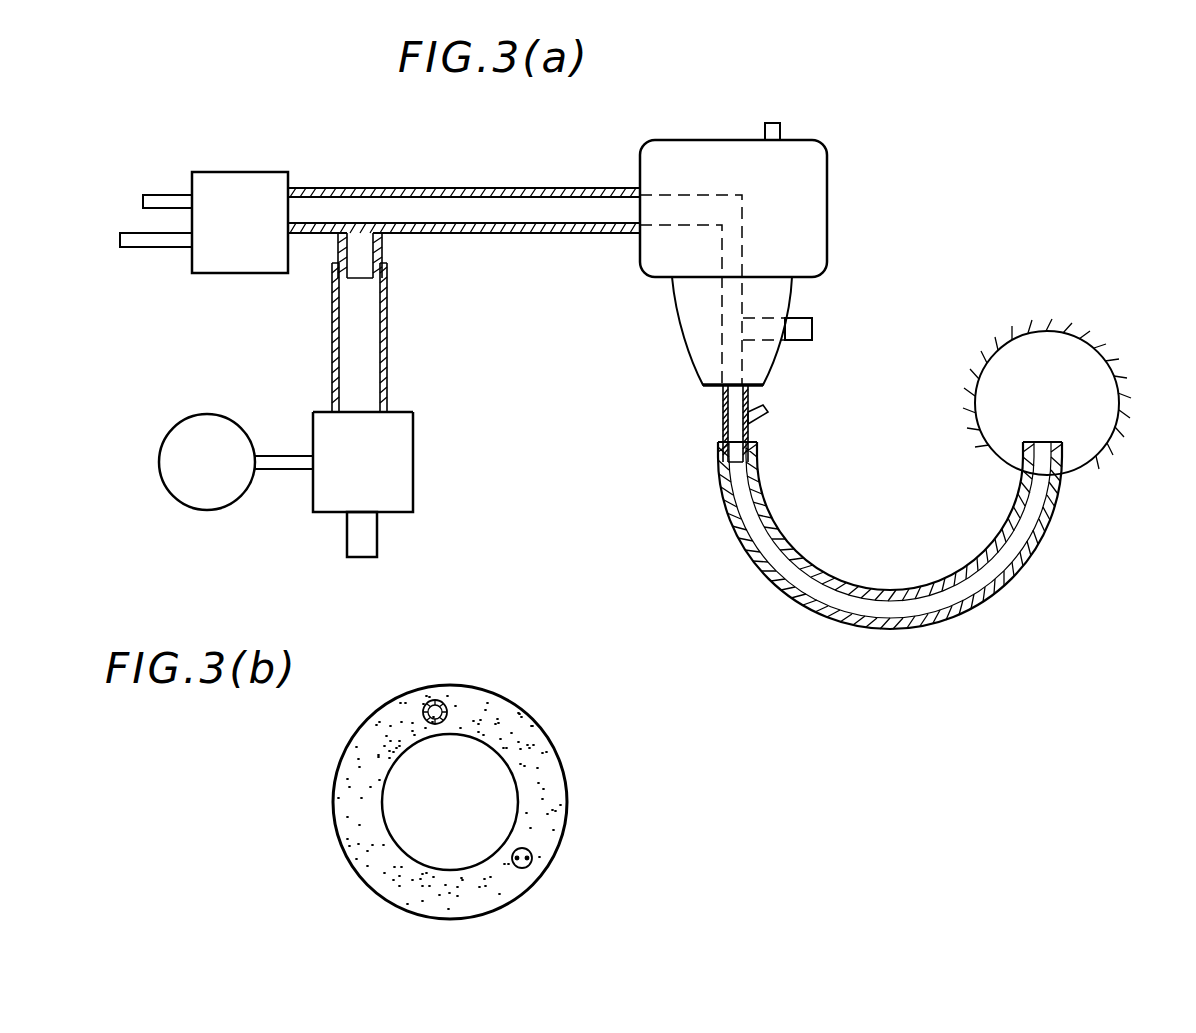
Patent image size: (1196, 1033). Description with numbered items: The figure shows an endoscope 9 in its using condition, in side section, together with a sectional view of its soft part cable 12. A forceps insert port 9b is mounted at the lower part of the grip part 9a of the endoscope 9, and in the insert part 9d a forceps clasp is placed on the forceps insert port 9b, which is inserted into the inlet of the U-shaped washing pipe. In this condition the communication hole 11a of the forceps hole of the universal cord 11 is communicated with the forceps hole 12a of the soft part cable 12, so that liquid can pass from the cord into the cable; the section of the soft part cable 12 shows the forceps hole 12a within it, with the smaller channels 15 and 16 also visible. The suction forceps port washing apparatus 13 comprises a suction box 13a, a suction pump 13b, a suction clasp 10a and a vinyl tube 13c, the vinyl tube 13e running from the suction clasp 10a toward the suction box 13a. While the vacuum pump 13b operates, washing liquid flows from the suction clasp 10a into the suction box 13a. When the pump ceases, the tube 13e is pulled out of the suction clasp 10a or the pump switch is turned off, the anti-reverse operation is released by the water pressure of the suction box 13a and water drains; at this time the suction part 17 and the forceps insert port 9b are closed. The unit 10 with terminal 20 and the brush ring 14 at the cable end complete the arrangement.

In FIG. 3A, the endoscope 9 is at (828, 207).
In FIG. 3A, the grip part 9a is at (796, 295).
In FIG. 3A, the forceps insert port 9b is at (766, 412).
In FIG. 3A, the insert part 9d is at (722, 432).
In FIG. 3A, the control unit 10 is at (243, 172).
In FIG. 3A, the suction clasp 10a is at (340, 258).
In FIG. 3A, the universal cord 11 is at (598, 235).
In FIG. 3A, the communication hole 11a is at (510, 228).
In FIG. 3A, the soft part cable 12 is at (886, 548).
In FIG. 3B, the soft part cable 12 is at (533, 716).
In FIG. 3A, the forceps hole 12a is at (776, 580).
In FIG. 3B, the forceps hole 12a is at (510, 770).
In FIG. 3A, the suction forceps port washing apparatus 13 is at (414, 484).
In FIG. 3A, the suction box 13a is at (414, 432).
In FIG. 3A, the suction pump 13b is at (208, 511).
In FIG. 3A, the vinyl tube 13c is at (378, 543).
In FIG. 3A, the vinyl tube 13e is at (388, 346).
In FIG. 3A, the brush ring 14 is at (1098, 356).
In FIG. 3B, the wire conduit 15 is at (438, 701).
In FIG. 3B, the electrical lead conduit 16 is at (532, 858).
In FIG. 3A, the suction part 17 is at (813, 336).
In FIG. 3A, the terminal 20 is at (776, 122).